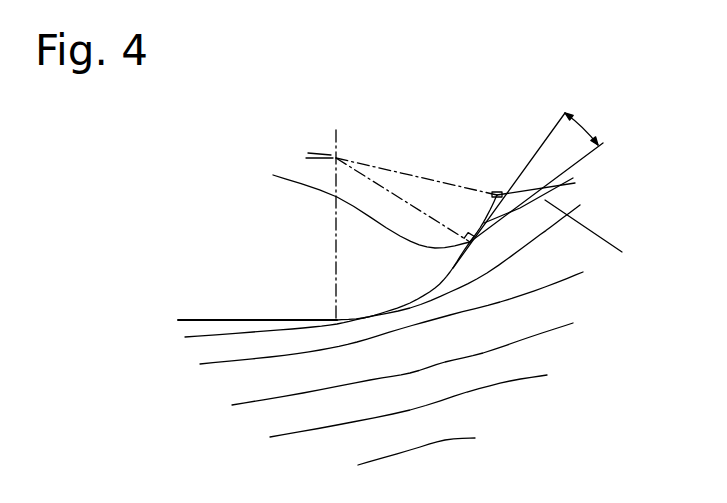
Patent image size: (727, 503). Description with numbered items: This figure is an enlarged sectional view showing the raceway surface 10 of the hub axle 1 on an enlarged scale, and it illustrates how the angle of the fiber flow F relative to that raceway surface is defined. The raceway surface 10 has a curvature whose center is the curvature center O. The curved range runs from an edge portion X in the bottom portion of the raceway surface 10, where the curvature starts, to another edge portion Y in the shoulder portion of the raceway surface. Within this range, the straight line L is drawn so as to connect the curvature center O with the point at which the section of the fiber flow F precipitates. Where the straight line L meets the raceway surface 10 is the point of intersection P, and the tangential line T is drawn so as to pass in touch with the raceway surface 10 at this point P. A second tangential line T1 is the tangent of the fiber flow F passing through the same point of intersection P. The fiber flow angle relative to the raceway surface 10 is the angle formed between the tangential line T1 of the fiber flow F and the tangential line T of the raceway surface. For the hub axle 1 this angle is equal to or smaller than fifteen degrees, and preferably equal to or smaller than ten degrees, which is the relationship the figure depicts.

The hub axle 1 is at (505, 363).
The raceway surface 10 is at (405, 303).
The edge portion X is at (257, 302).
The edge portion Y is at (455, 177).
The curvature center O is at (319, 218).
The straight line L is at (390, 192).
The point of intersection P is at (357, 205).
The tangential line T is at (550, 133).
The tangential line of the fiber flow T1 is at (580, 160).
The fiber flow F is at (601, 242).